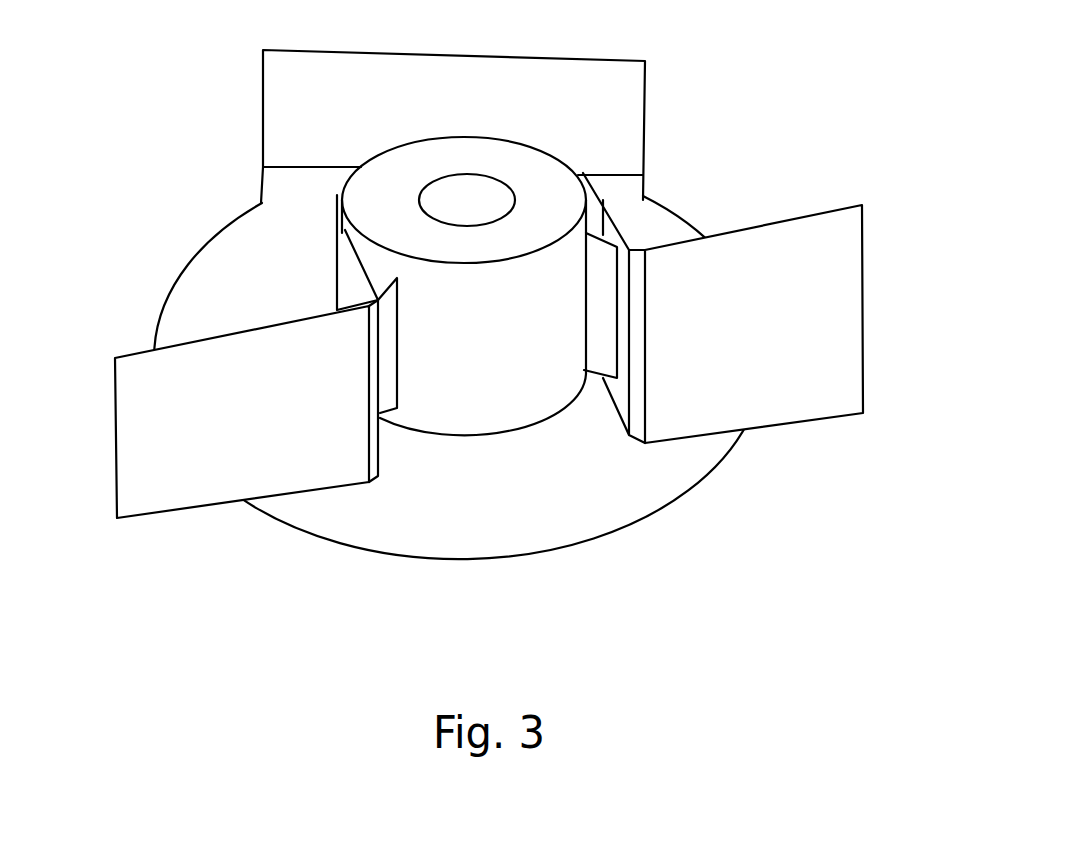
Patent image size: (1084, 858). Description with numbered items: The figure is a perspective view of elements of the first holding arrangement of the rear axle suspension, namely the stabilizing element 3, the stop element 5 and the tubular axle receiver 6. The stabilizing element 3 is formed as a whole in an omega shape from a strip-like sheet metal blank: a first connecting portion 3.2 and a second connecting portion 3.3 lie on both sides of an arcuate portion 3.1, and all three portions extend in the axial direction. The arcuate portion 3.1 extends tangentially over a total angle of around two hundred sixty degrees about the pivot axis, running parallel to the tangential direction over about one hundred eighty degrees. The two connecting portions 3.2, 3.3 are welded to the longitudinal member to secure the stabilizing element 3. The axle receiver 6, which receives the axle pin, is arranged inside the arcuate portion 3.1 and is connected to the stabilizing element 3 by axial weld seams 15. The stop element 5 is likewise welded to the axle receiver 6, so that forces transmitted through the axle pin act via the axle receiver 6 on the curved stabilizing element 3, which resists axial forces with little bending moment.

The stabilizing element 3 is at (259, 455).
The arcuate portion 3.1 is at (630, 202).
The first connecting portion 3.2 is at (168, 434).
The second connecting portion 3.3 is at (840, 300).
The stop element 5 is at (213, 270).
The axle receiver 6 is at (497, 395).
The axial weld seam 15 is at (383, 412).